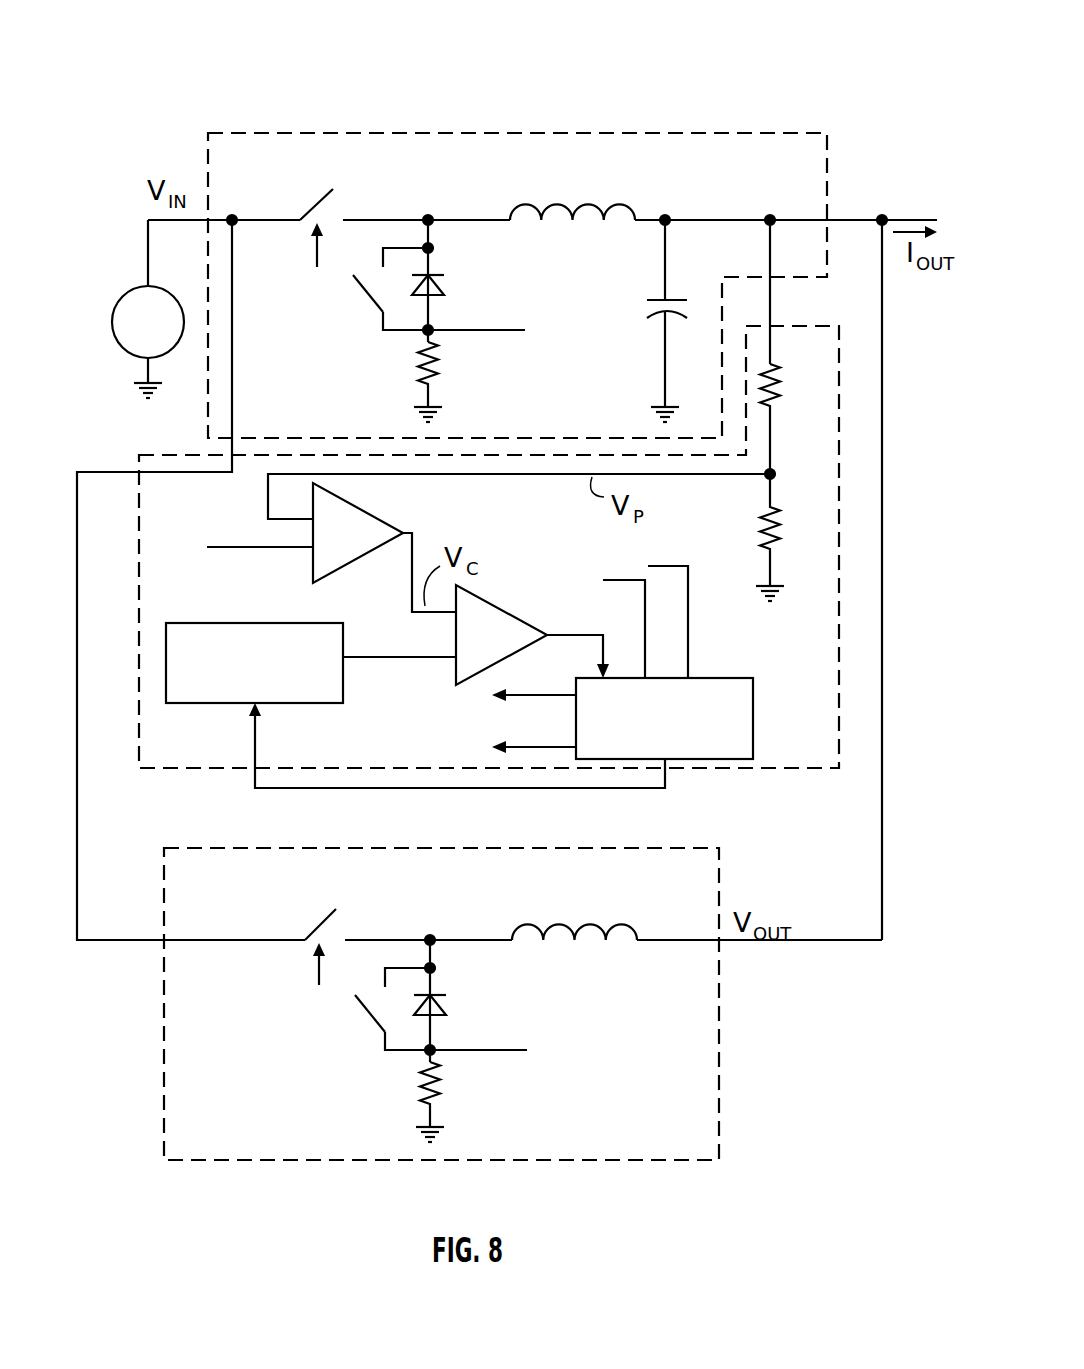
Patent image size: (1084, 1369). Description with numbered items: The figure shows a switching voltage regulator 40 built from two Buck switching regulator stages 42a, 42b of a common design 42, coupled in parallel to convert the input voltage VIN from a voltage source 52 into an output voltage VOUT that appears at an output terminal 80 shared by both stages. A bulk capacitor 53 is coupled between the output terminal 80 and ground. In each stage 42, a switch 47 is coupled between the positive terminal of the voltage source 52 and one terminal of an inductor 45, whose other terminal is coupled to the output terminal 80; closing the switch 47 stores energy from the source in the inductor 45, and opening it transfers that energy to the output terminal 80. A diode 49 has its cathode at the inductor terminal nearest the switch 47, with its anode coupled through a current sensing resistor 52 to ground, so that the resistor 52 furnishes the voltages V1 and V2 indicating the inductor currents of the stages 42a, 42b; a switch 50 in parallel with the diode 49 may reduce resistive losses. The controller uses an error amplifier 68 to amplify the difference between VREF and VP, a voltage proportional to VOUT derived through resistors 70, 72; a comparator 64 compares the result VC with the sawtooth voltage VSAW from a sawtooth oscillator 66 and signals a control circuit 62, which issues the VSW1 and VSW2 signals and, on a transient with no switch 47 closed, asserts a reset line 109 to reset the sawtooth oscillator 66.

The switching voltage regulator 40 is at (728, 48).
The Buck switching regulator stage 42 is at (661, 128).
The first Buck switching regulator stage 42a is at (731, 128).
The second Buck switching regulator stage 42b is at (721, 1072).
The inductor 45 is at (541, 222).
The switch 47 is at (327, 188).
The diode 49 is at (446, 284).
The switch 50 is at (370, 298).
The voltage source / current sensing resistor 52 is at (128, 292).
The bulk capacitor 53 is at (678, 298).
The control circuit 62 is at (730, 676).
The comparator 64 is at (497, 604).
The sawtooth oscillator 66 is at (180, 621).
The error amplifier 68 is at (343, 568).
The feedback resistor 70 is at (776, 372).
The feedback resistor 72 is at (776, 515).
The output terminal 80 is at (838, 218).
The reset line 109 is at (440, 790).